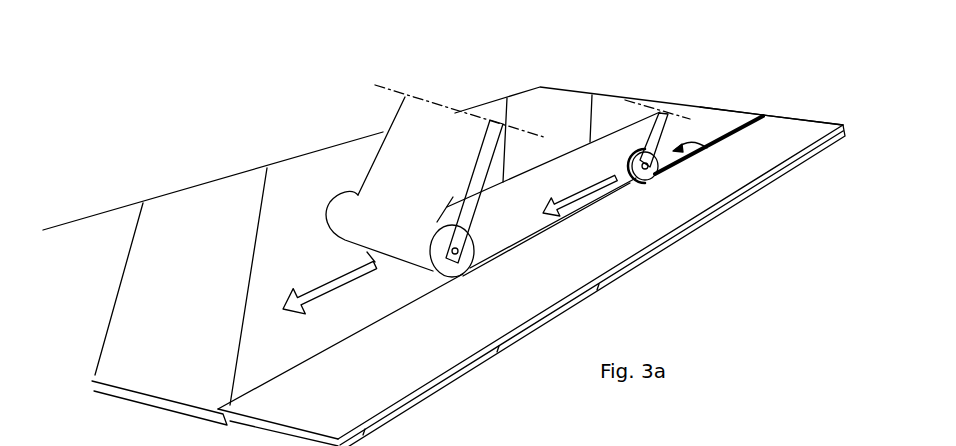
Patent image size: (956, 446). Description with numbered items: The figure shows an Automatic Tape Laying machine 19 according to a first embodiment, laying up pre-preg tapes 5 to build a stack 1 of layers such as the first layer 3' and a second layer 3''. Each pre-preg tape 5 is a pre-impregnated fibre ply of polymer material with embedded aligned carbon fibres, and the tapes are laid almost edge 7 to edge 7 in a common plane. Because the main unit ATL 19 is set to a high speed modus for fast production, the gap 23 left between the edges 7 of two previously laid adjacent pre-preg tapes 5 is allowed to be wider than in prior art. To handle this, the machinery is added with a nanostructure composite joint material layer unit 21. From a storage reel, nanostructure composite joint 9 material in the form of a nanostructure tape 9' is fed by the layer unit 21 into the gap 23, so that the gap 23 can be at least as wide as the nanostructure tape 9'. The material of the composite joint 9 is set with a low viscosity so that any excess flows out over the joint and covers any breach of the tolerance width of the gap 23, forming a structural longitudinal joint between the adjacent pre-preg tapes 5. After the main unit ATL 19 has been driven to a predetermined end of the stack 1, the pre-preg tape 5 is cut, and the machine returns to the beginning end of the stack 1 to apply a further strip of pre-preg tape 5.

The stack 1 is at (808, 181).
The first layer 3' is at (543, 338).
The second layer 3'' is at (682, 251).
The pre-preg tape 5 is at (717, 117).
The edge 7 is at (218, 412).
The composite joint 9 is at (549, 153).
The nanostructure tape 9' is at (715, 95).
The Automatic Tape Laying machine 19 is at (556, 38).
The nanostructure composite joint material layer unit 21 is at (709, 152).
The gap 23 is at (523, 238).